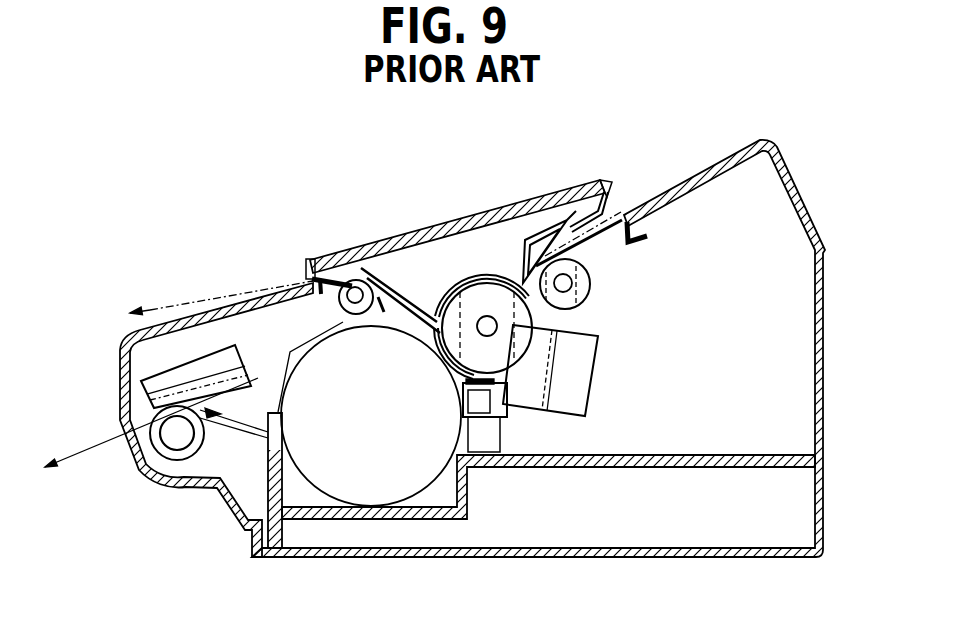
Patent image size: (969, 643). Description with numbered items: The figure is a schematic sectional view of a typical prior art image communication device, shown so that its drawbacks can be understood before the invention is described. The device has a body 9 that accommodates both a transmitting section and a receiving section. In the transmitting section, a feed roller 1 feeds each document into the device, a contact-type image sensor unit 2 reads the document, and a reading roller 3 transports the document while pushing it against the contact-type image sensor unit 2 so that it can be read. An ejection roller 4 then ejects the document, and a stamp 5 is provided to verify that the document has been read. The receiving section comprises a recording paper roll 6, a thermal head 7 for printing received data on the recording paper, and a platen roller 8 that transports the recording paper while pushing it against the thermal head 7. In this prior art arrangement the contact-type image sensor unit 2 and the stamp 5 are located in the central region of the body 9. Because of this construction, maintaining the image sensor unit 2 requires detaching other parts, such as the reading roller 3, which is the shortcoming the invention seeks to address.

The feed roller 1 is at (591, 290).
The contact-type image sensor unit 2 is at (580, 370).
The reading roller 3 is at (485, 297).
The ejection roller 4 is at (357, 280).
The stamp 5 is at (500, 412).
The recording paper roll 6 is at (370, 493).
The thermal head 7 is at (148, 378).
The platen roller 8 is at (150, 472).
The body 9 is at (815, 470).